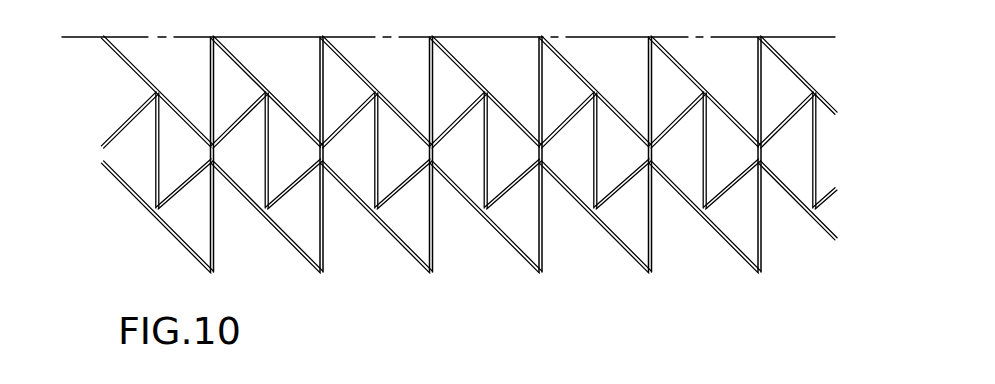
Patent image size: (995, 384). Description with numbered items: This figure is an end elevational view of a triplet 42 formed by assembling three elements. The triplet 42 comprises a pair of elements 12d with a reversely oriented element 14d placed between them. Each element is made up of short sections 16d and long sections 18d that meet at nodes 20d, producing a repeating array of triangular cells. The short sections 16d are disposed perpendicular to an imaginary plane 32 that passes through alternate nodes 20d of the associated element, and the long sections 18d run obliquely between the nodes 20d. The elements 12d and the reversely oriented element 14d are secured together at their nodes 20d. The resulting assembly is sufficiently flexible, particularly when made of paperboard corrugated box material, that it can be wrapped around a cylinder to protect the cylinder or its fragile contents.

The element 12d is at (567, 59).
The reversely oriented element 14d is at (597, 124).
The short section 16d is at (320, 100).
The long section 18d is at (264, 87).
The node 20d is at (174, 84).
The imaginary plane 32 is at (258, 36).
The triplet 42 is at (153, 213).